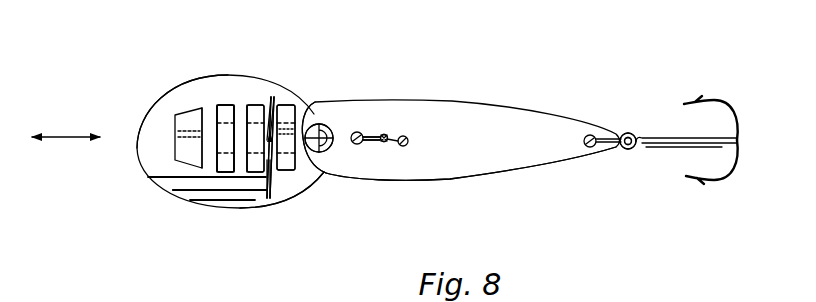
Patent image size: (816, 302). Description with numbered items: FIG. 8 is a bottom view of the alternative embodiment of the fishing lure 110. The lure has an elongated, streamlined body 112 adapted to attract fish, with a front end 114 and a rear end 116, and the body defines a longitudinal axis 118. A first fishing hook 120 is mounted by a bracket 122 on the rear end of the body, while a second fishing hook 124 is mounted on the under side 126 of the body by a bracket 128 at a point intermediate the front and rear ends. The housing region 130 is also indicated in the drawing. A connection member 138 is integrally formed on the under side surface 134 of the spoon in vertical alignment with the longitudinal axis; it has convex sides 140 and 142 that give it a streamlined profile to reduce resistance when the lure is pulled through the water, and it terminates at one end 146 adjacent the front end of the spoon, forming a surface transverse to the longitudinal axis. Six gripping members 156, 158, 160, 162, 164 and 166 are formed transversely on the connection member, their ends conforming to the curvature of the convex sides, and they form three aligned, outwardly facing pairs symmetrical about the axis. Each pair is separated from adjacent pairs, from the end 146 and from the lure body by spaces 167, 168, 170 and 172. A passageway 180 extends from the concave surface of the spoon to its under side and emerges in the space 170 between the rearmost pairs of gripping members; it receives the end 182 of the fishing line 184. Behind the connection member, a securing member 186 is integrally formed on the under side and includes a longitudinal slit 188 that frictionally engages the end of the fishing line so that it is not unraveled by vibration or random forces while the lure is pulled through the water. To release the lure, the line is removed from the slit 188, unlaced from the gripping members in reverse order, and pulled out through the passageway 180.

The fishing lure 110 is at (326, 182).
The body 112 is at (588, 128).
The front end 114 is at (312, 112).
The rear end 116 is at (631, 118).
The longitudinal axis 118 is at (62, 136).
The first fishing hook 120 is at (690, 147).
The bracket 122 is at (614, 148).
The second fishing hook 124 is at (393, 145).
The under side 126 is at (510, 133).
The bracket 128 is at (388, 135).
The transparent head housing 130 is at (138, 158).
The under side surface 134 is at (177, 189).
The connection member 138 is at (152, 134).
The convex side 140 is at (221, 196).
The convex side 142 is at (243, 82).
The end 146 is at (158, 161).
The gripping member 156 is at (222, 175).
The gripping member 158 is at (223, 105).
The gripping member 160 is at (251, 173).
The gripping member 162 is at (271, 97).
The gripping member 164 is at (288, 173).
The gripping member 166 is at (289, 104).
The space 167 is at (209, 107).
The space 168 is at (234, 103).
The space 170 is at (264, 104).
The space 172 is at (305, 168).
The passageway 180 is at (274, 104).
The end of fishing line 182 is at (255, 181).
The fishing line 184 is at (267, 202).
The member 186 is at (323, 126).
The longitudinal slit 188 is at (321, 152).